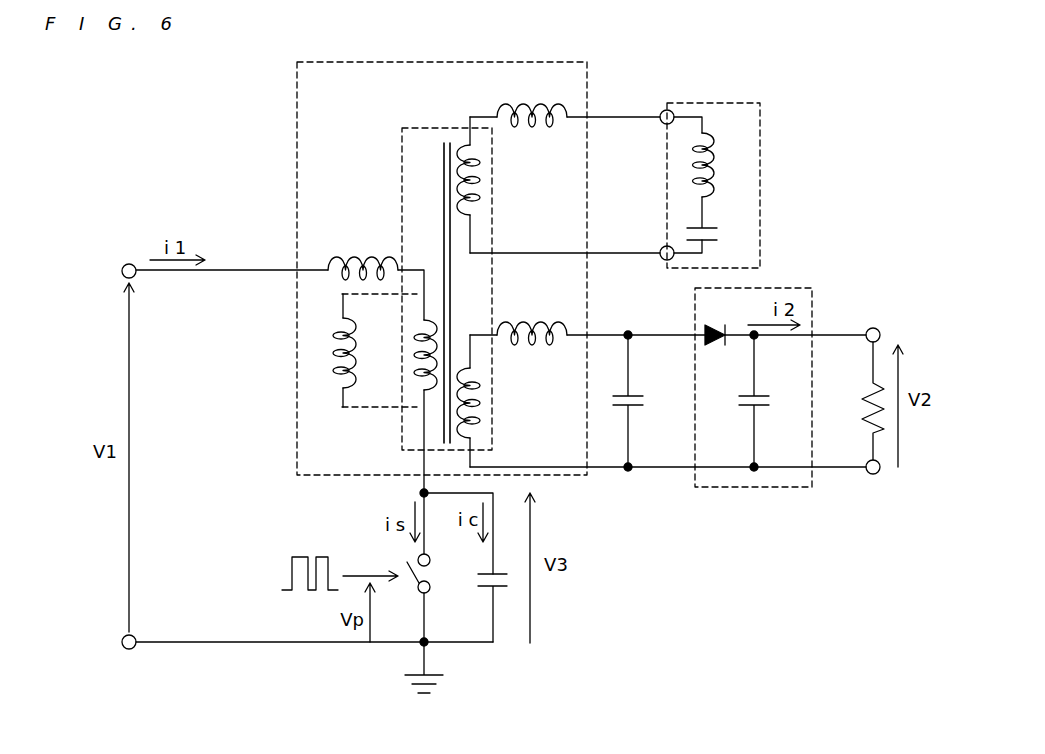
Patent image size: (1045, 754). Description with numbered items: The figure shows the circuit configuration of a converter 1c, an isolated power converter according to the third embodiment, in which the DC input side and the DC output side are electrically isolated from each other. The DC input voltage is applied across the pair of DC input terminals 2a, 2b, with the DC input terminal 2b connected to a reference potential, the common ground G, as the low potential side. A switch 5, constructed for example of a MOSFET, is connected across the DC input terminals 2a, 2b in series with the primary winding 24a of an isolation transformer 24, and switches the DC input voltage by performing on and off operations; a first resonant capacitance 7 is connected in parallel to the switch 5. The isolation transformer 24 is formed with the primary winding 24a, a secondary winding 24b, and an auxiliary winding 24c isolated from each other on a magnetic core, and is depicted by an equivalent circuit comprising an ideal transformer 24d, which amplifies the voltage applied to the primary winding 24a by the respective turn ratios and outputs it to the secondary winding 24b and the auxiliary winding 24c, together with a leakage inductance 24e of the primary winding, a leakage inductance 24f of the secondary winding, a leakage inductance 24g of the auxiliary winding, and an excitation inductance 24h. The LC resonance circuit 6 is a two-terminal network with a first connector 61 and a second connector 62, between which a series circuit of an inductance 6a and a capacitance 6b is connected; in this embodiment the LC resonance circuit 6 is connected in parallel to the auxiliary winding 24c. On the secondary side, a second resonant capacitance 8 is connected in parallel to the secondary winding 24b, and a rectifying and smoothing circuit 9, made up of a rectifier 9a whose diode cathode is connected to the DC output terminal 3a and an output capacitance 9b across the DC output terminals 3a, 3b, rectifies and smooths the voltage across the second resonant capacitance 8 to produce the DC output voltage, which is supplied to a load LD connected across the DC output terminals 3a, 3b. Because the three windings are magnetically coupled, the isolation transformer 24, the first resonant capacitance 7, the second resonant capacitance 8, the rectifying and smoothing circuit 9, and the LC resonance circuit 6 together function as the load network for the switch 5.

The converter 1c is at (212, 73).
The isolation transformer 24 is at (287, 151).
The primary winding 24a is at (389, 429).
The secondary winding 24b is at (508, 403).
The auxiliary winding 24c is at (503, 197).
The ideal transformer 24d is at (494, 238).
The leakage inductance of the primary winding 24e is at (350, 256).
The leakage inductance of the secondary winding 24f is at (508, 322).
The leakage inductance of the auxiliary winding 24g is at (532, 124).
The excitation inductance 24h is at (339, 378).
The DC input terminal 2a is at (130, 263).
The DC input terminal 2b is at (132, 651).
The DC output terminal 3a is at (876, 327).
The DC output terminal 3b is at (876, 475).
The switch 5 is at (432, 575).
The LC resonance circuit 6 is at (730, 185).
The inductance 6a is at (717, 178).
The capacitance 6b is at (715, 233).
The first connector 61 is at (661, 126).
The second connector 62 is at (661, 244).
The first resonant capacitance 7 is at (500, 571).
The second resonant capacitance 8 is at (640, 392).
The rectifying and smoothing circuit 9 is at (765, 364).
The rectifier 9a is at (714, 325).
The output capacitance 9b is at (763, 392).
The load LD is at (862, 410).
The common ground G is at (432, 676).